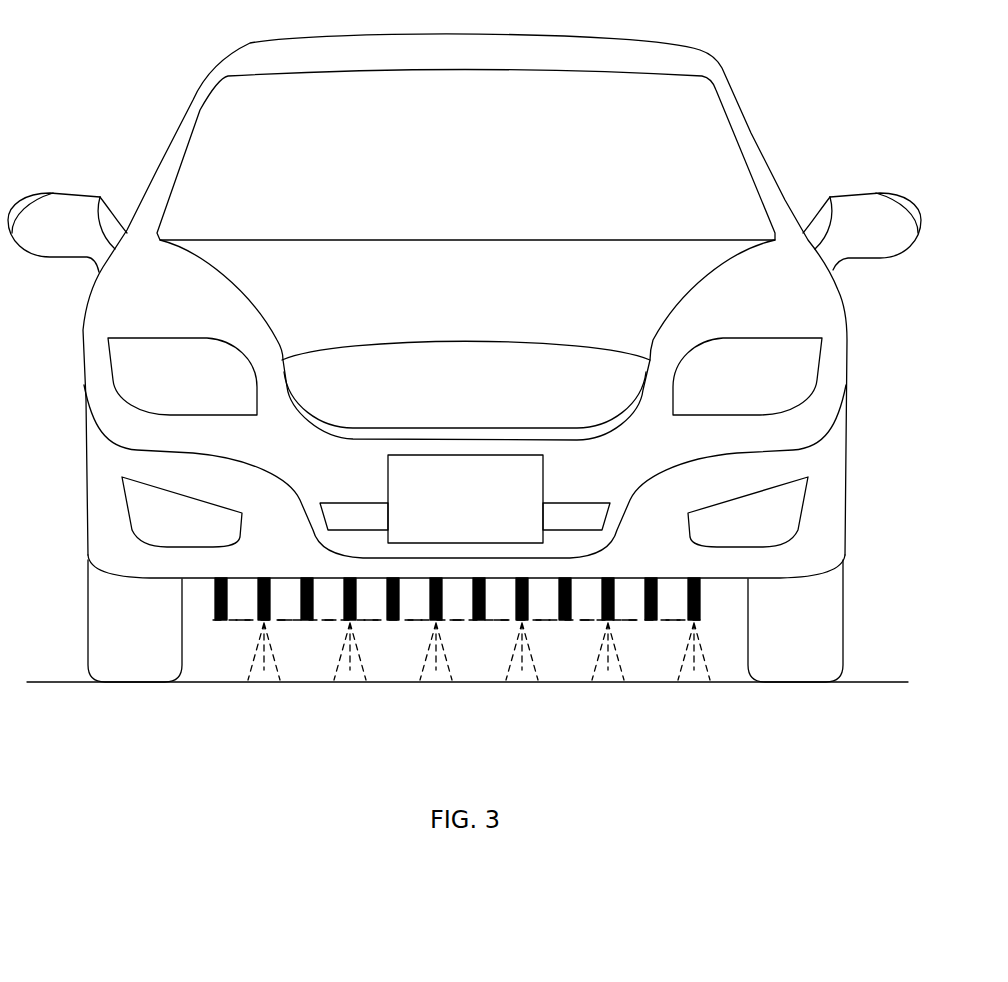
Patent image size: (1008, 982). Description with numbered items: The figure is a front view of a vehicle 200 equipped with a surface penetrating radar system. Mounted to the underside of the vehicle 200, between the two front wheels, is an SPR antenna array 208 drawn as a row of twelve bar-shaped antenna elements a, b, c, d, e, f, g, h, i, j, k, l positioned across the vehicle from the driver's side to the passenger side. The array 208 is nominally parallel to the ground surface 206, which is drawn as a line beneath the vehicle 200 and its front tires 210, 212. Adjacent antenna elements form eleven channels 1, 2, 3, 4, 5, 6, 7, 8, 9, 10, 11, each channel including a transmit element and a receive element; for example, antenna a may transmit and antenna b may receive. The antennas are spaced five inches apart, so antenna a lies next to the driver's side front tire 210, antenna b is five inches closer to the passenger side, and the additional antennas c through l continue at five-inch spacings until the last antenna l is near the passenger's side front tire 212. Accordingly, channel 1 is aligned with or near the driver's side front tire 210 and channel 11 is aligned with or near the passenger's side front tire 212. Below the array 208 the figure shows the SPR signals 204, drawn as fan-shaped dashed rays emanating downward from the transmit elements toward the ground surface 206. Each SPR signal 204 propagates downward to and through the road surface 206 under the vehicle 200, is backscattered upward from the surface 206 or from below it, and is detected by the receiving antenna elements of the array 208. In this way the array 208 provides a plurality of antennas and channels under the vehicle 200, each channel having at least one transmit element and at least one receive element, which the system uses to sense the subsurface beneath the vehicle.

The vehicle 200 is at (237, 62).
The SPR signal 204 is at (250, 670).
The ground surface 206 is at (45, 682).
The SPR antenna array 208 is at (213, 607).
The front tire 210 is at (770, 668).
The front tire 212 is at (110, 648).
The channel 1 is at (688, 621).
The channel 2 is at (617, 621).
The channel 3 is at (599, 621).
The channel 4 is at (531, 621).
The channel 5 is at (512, 621).
The channel 6 is at (446, 621).
The channel 7 is at (427, 621).
The channel 8 is at (358, 621).
The channel 9 is at (340, 621).
The channel 10 is at (281, 621).
The channel 11 is at (250, 621).
The antenna element a is at (688, 598).
The antenna element b is at (645, 598).
The antenna element c is at (602, 598).
The antenna element d is at (559, 598).
The antenna element e is at (516, 598).
The antenna element f is at (473, 598).
The antenna element g is at (430, 598).
The antenna element h is at (387, 598).
The antenna element i is at (344, 598).
The antenna element j is at (301, 598).
The antenna element k is at (258, 598).
The antenna element l is at (228, 612).